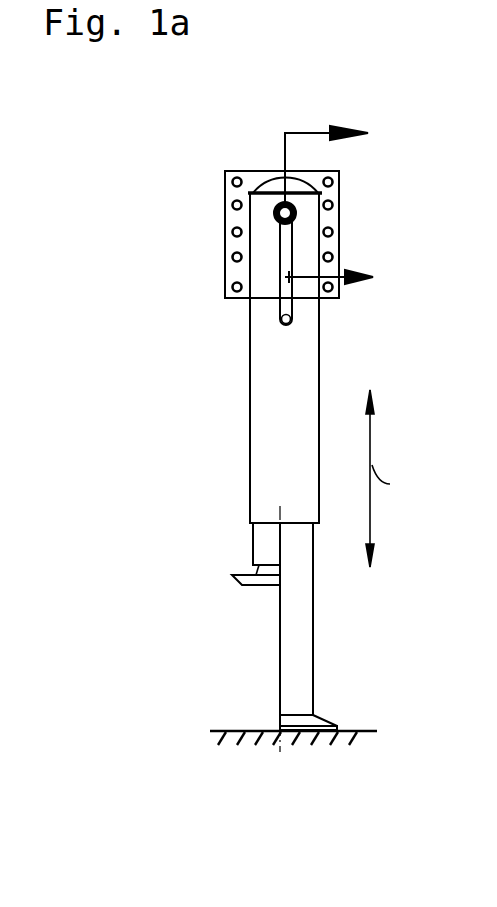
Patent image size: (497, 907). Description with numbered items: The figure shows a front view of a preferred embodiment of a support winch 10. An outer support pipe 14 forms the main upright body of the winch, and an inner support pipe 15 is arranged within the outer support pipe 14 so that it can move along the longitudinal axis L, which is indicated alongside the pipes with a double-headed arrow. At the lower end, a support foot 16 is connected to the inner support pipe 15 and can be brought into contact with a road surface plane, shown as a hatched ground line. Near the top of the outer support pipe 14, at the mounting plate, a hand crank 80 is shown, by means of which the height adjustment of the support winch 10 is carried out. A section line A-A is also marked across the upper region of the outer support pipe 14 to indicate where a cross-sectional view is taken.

The support winch 10 is at (163, 206).
The outer support pipe 14 is at (265, 415).
The inner support pipe 15 is at (262, 537).
The support foot 16 is at (248, 580).
The hand crank 80 is at (278, 308).